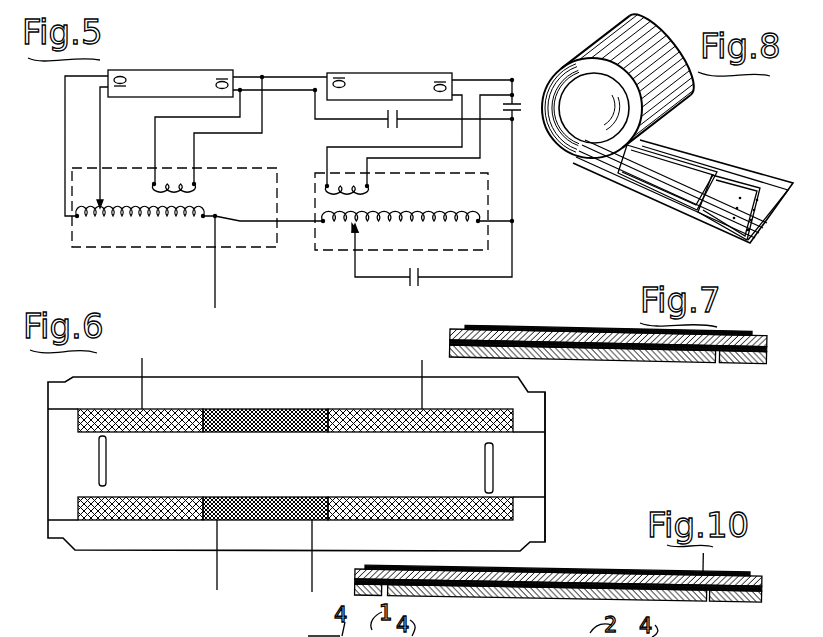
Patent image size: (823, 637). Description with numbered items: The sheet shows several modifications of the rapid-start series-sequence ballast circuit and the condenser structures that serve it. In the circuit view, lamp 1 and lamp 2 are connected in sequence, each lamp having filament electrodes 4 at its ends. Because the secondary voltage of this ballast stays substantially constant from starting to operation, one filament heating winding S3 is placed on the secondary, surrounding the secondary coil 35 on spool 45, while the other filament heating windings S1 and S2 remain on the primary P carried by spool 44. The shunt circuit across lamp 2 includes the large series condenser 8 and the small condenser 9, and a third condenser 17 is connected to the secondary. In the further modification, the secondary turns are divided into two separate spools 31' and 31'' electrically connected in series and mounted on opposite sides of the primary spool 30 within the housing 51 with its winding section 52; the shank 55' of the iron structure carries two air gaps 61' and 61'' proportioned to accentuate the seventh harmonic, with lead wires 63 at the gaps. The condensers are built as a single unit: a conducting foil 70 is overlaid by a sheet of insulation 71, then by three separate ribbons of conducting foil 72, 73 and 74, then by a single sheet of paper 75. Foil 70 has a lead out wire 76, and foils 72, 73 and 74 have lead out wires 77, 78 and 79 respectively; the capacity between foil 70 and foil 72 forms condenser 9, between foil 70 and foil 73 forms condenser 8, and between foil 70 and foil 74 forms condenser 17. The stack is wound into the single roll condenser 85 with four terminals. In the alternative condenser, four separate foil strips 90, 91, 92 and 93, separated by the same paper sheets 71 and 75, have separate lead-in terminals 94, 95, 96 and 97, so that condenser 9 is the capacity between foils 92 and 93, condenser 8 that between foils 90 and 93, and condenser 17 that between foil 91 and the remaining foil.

In FIG. 5, the lamp 1 is at (178, 70).
In FIG. 5, the lamp 2 is at (387, 72).
In FIG. 5, the lamp electrode / end cap 4 is at (125, 77).
In FIG. 5, the series condenser 8 is at (521, 127).
In FIG. 5, the small condenser 9 is at (398, 128).
In FIG. 5, the condenser 17 is at (416, 288).
In FIG. 6, the spool 30 is at (247, 522).
In FIG. 6, the spool 31' is at (295, 541).
In FIG. 6, the spool 31'' is at (286, 466).
In FIG. 5, the secondary coil 35 is at (413, 221).
In FIG. 5, the spool 44 is at (72, 188).
In FIG. 5, the spool 45 is at (488, 185).
In FIG. 6, the housing 51 is at (147, 550).
In FIG. 6, the winding section 52 is at (227, 380).
In FIG. 6, the shank 55' is at (574, 467).
In FIG. 6, the air gap 61' is at (511, 468).
In FIG. 6, the air gap 61'' is at (137, 461).
In FIG. 6, the lead wires 63 is at (100, 487).
In FIG. 7, the conducting foil 70 is at (548, 328).
In FIG. 7, the sheet of insulation 71 is at (678, 347).
In FIG. 10, the sheet of insulation 71 is at (762, 587).
In FIG. 7, the ribbon of conducting foil 72 is at (500, 346).
In FIG. 7, the ribbon of conducting foil 73 is at (592, 350).
In FIG. 7, the ribbon of conducting foil 74 is at (723, 357).
In FIG. 7, the sheet of paper 75 is at (560, 347).
In FIG. 10, the sheet of paper 75 is at (763, 598).
In FIG. 8, the lead out wire 76 is at (700, 268).
In FIG. 7, the lead out wire 76 is at (612, 285).
In FIG. 8, the lead out wire 77 is at (691, 243).
In FIG. 7, the lead out wire 77 is at (485, 345).
In FIG. 8, the lead out wire 78 is at (658, 192).
In FIG. 7, the lead out wire 78 is at (607, 350).
In FIG. 8, the lead out wire 79 is at (592, 220).
In FIG. 7, the lead out wire 79 is at (735, 348).
In FIG. 8, the single roll condenser 85 is at (565, 56).
In FIG. 10, the conductive foil 90 is at (577, 570).
In FIG. 10, the conductive foil 91 is at (455, 590).
In FIG. 10, the conductive foil 92 is at (665, 575).
In FIG. 10, the conductive foil 93 is at (708, 598).
In FIG. 10, the terminal 94 is at (510, 566).
In FIG. 10, the terminal 95 is at (418, 590).
In FIG. 10, the terminal 96 is at (608, 618).
In FIG. 10, the terminal 97 is at (703, 567).
In FIG. 5, the primary winding P is at (172, 225).
In FIG. 6, the primary winding P is at (257, 600).
In FIG. 5, the filament heating winding S1 is at (95, 225).
In FIG. 5, the filament heating winding S2 is at (172, 180).
In FIG. 5, the filament heating winding S3 is at (345, 186).